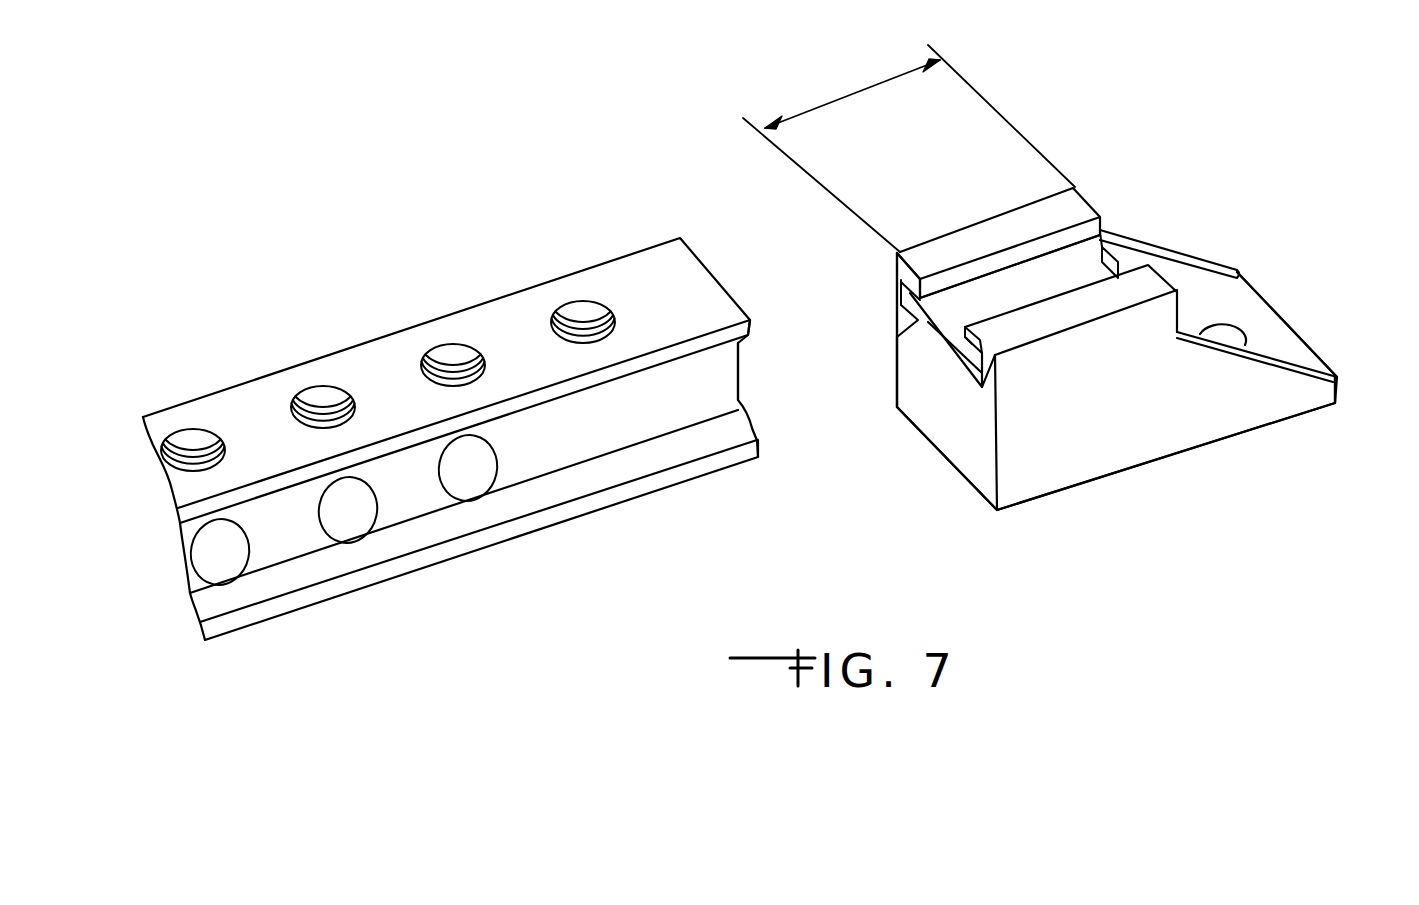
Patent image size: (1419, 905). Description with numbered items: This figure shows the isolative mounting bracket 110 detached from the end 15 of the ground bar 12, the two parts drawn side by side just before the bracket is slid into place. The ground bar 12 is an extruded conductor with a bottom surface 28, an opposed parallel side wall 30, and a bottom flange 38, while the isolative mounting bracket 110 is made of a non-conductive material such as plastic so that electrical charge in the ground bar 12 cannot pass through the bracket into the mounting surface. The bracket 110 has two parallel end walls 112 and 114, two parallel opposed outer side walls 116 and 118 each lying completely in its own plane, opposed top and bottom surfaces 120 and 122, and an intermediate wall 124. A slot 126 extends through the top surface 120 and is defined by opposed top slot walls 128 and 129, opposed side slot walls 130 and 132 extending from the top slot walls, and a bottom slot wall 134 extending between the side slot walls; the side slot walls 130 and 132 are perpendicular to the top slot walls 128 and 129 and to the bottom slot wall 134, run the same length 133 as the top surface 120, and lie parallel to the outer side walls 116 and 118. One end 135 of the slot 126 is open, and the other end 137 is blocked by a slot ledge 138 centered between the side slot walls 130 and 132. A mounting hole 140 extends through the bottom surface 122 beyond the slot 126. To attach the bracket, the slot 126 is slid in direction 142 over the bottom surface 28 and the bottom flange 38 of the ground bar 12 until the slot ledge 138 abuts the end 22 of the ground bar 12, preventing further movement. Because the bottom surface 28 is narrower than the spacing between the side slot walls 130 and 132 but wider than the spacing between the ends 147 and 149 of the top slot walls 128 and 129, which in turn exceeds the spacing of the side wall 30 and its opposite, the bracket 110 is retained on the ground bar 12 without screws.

The ground bar 12 is at (519, 288).
The end of the ground bar 15 is at (740, 372).
The end of the ground bar 22 is at (741, 400).
The side wall of the ground bar 30 is at (633, 390).
The bottom flange 38 is at (760, 463).
The bottom surface of the ground bar 28 is at (632, 508).
The isolative mounting bracket 110 is at (1115, 432).
The end wall 112 is at (948, 425).
The outer side wall 116 is at (1032, 455).
The bottom surface 122 is at (1255, 430).
The end wall 114 is at (1338, 380).
The direction 142 is at (1327, 327).
The mounting hole 140 is at (1236, 330).
The intermediate wall 124 is at (1118, 263).
The slot ledge 138 is at (1112, 262).
The other end of the slot 137 is at (1105, 262).
The top surface 120 is at (1077, 303).
The slot 126 is at (985, 295).
The end of the top slot wall 147 is at (920, 280).
The outer side wall 118 is at (893, 340).
The top slot wall 128 is at (897, 337).
The side slot wall 130 is at (908, 300).
The one end of the slot 135 is at (897, 337).
The bottom slot wall 134 is at (928, 318).
The side slot wall 132 is at (983, 372).
The top slot wall 129 is at (965, 327).
The end of the top slot wall 149 is at (960, 343).
The length 133 is at (838, 93).